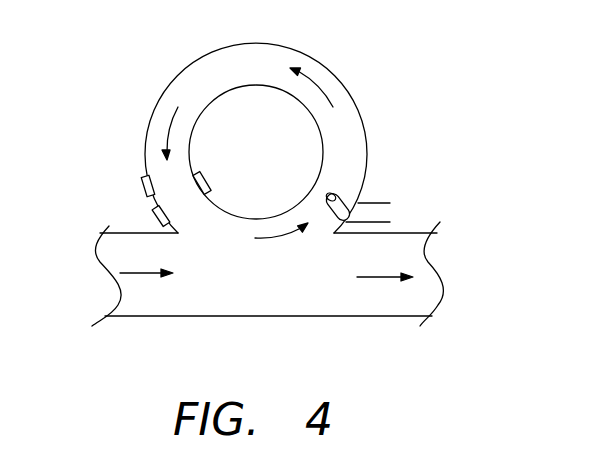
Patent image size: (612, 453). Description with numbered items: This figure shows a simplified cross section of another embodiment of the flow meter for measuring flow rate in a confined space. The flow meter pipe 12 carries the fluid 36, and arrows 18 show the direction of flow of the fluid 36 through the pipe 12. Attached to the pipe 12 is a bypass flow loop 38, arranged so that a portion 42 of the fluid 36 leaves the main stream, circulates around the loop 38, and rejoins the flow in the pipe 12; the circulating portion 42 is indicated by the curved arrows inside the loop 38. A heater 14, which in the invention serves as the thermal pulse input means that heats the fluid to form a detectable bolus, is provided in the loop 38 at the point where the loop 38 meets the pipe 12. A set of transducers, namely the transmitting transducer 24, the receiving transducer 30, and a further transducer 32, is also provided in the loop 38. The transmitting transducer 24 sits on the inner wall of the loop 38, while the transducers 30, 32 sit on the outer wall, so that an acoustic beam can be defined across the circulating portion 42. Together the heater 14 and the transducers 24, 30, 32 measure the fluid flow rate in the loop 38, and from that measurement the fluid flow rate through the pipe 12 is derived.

The pipe 12 is at (187, 316).
The resistive heater 14 is at (357, 202).
The arrows showing direction of flow 18 is at (130, 273).
The transmitting transducer 24 is at (210, 182).
The receiving transducer 30 is at (145, 185).
The transducer 32 is at (154, 217).
The fluid 36 is at (330, 290).
The bypass flow loop 38 is at (365, 128).
The portion of the fluid circulating in the loop 42 is at (326, 91).